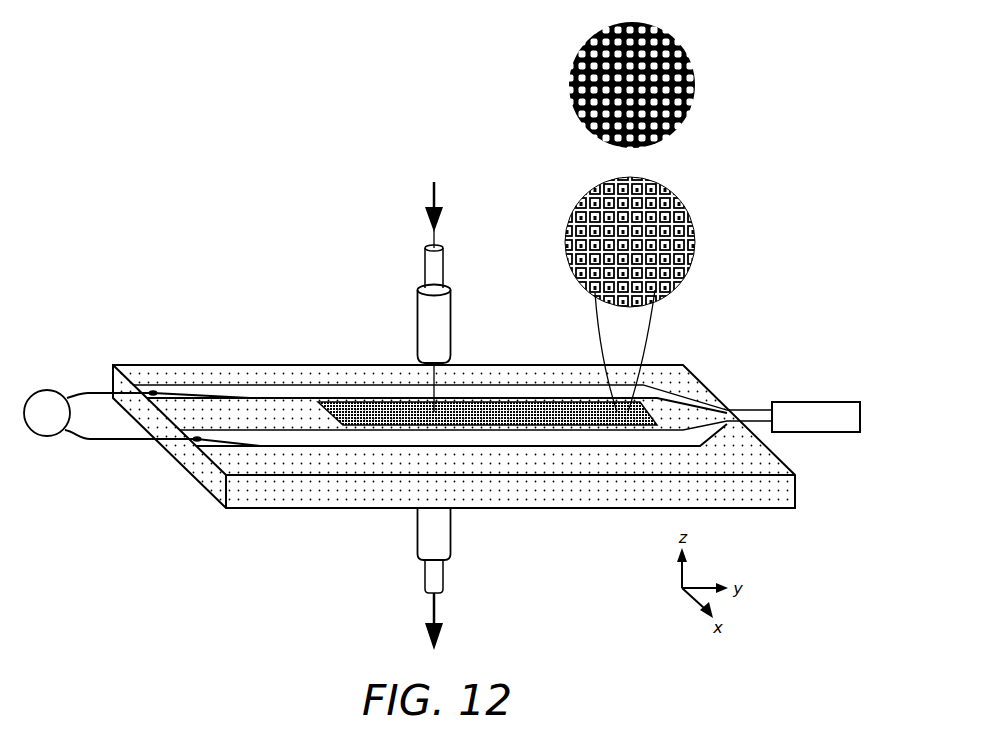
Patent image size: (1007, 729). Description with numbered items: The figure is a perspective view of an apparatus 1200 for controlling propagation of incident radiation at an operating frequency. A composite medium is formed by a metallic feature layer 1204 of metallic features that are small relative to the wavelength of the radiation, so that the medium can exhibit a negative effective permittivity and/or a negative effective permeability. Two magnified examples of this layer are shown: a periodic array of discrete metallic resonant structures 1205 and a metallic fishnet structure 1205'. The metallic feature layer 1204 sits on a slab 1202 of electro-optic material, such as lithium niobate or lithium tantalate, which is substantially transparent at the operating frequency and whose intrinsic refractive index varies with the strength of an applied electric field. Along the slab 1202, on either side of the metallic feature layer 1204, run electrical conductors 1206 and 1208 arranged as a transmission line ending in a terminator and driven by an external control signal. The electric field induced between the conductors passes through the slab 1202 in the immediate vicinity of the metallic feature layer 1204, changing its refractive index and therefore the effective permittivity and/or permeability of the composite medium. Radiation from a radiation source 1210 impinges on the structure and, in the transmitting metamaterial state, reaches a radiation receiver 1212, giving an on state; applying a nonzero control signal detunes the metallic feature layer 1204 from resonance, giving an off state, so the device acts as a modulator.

The apparatus 1200 is at (442, 416).
The slab 1202 is at (178, 372).
The metallic feature layer 1204 is at (500, 400).
The periodic array of discrete metallic resonant structures 1205 is at (676, 292).
The metallic fishnet structure 1205' is at (674, 74).
The electrical conductor 1206 is at (237, 393).
The electrical conductor 1208 is at (250, 437).
The radiation source 1210 is at (417, 315).
The radiation receiver 1212 is at (427, 530).